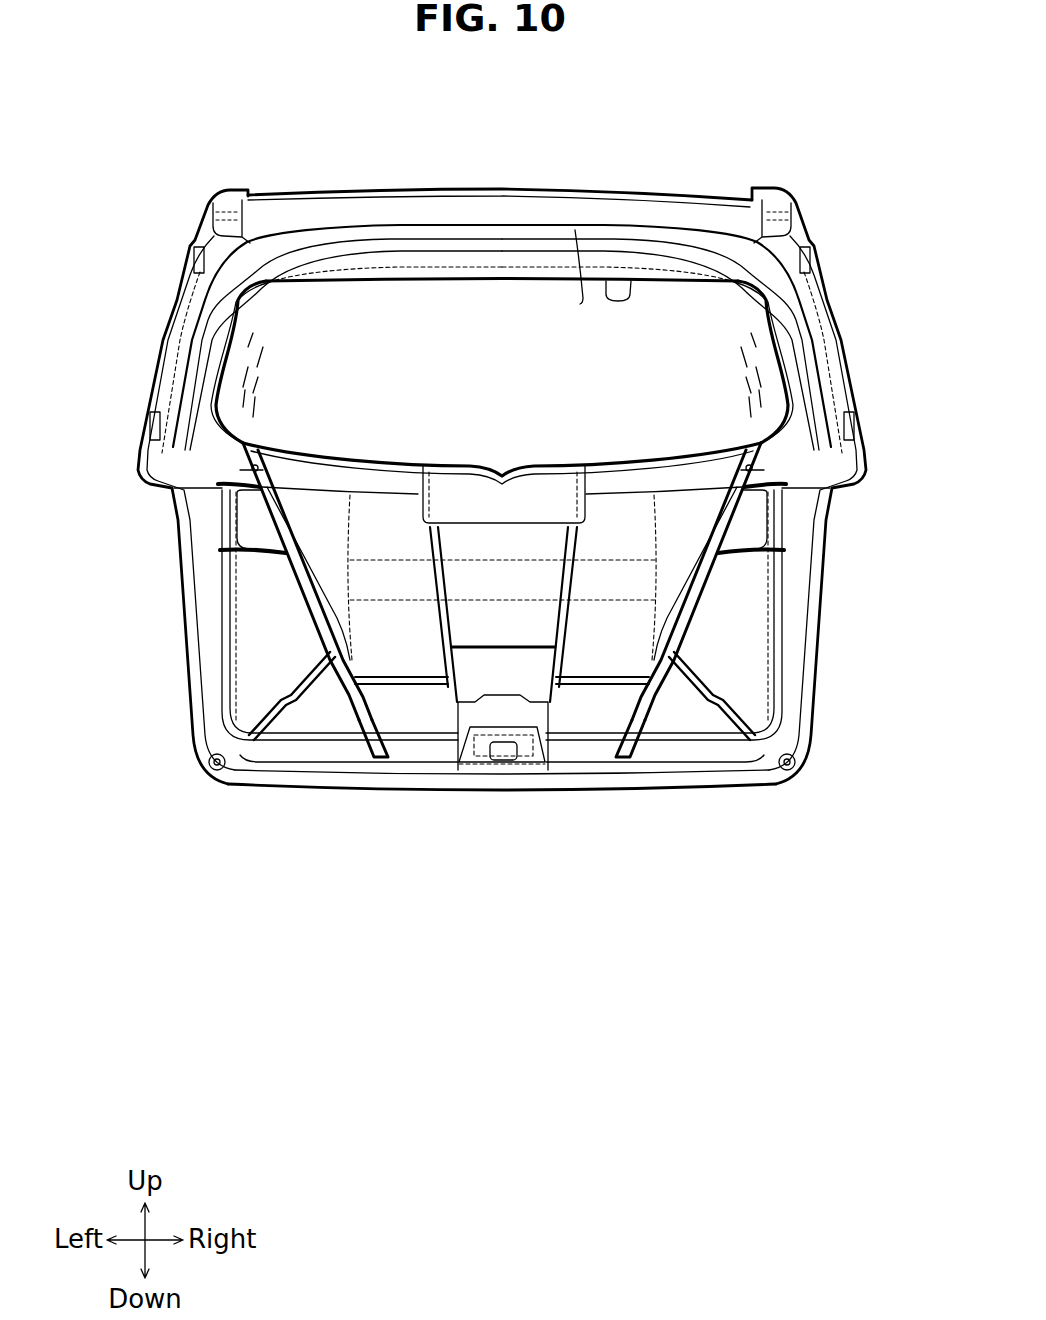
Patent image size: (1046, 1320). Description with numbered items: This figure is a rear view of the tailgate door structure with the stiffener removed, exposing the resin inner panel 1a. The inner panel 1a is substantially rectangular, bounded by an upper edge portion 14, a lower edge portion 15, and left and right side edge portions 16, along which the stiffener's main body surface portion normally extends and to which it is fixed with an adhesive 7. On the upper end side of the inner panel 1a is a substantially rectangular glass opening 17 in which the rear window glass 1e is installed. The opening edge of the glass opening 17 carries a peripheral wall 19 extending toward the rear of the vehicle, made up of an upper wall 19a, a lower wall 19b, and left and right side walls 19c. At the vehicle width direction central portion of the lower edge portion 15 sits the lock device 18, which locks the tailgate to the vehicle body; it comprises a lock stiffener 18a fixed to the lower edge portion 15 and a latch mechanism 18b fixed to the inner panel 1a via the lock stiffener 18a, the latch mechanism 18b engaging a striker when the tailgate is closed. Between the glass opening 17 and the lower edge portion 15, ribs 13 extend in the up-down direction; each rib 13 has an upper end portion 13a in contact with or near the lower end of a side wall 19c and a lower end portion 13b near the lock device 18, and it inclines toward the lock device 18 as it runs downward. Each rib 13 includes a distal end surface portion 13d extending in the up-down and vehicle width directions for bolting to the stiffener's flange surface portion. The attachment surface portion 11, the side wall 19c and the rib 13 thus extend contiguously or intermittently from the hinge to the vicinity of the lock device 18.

The inner panel 1a is at (502, 189).
The rear window glass 1e is at (577, 232).
The adhesive 7 is at (226, 307).
The attachment surface portion 11 is at (203, 210).
The rib 13 is at (501, 647).
The upper end portion 13a is at (243, 468).
The lower end portion 13b is at (380, 757).
The distal end surface portion 13d is at (305, 573).
The upper edge portion 14 is at (440, 213).
The lower edge portion 15 is at (457, 788).
The side edge portion 16 is at (150, 387).
The glass opening 17 is at (628, 282).
The lock device 18 is at (536, 806).
The lock stiffener 18a is at (527, 750).
The latch mechanism 18b is at (502, 796).
The peripheral wall 19 is at (496, 303).
The upper wall 19a is at (355, 268).
The lower wall 19b is at (405, 466).
The side wall 19c is at (226, 330).